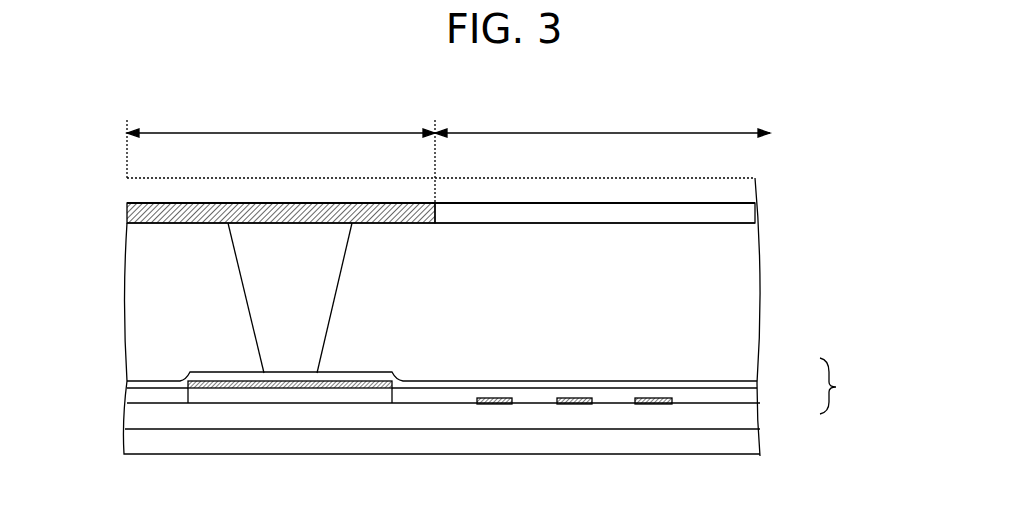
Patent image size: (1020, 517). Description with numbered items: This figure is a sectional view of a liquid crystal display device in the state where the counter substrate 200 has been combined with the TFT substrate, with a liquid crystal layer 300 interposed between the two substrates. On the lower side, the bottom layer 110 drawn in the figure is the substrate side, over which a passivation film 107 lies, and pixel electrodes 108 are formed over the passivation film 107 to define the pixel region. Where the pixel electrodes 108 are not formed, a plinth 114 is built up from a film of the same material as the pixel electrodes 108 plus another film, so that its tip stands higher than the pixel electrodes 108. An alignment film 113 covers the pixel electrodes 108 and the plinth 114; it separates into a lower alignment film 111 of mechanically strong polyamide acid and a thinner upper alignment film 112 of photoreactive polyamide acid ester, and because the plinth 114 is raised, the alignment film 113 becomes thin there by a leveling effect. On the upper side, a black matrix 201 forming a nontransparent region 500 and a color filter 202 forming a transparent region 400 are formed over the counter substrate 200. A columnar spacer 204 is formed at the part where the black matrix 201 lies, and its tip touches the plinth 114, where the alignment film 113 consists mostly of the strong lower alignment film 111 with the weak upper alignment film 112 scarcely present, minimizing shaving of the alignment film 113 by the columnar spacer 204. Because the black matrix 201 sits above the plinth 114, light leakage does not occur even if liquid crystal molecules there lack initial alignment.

The nontransparent region 500 is at (268, 133).
The transparent region 400 is at (630, 133).
The counter substrate 200 is at (740, 190).
The black matrix 201 is at (315, 210).
The color filter 202 is at (576, 215).
The liquid crystal layer 300 is at (738, 300).
The columnar spacer 204 is at (323, 287).
The upper alignment film 112 is at (760, 383).
The lower alignment film 111 is at (745, 397).
The alignment film 113 is at (847, 386).
The pixel electrodes 108 is at (217, 389).
The plinth 114 is at (377, 401).
The passivation film 107 is at (748, 420).
The substrate 110 is at (748, 445).